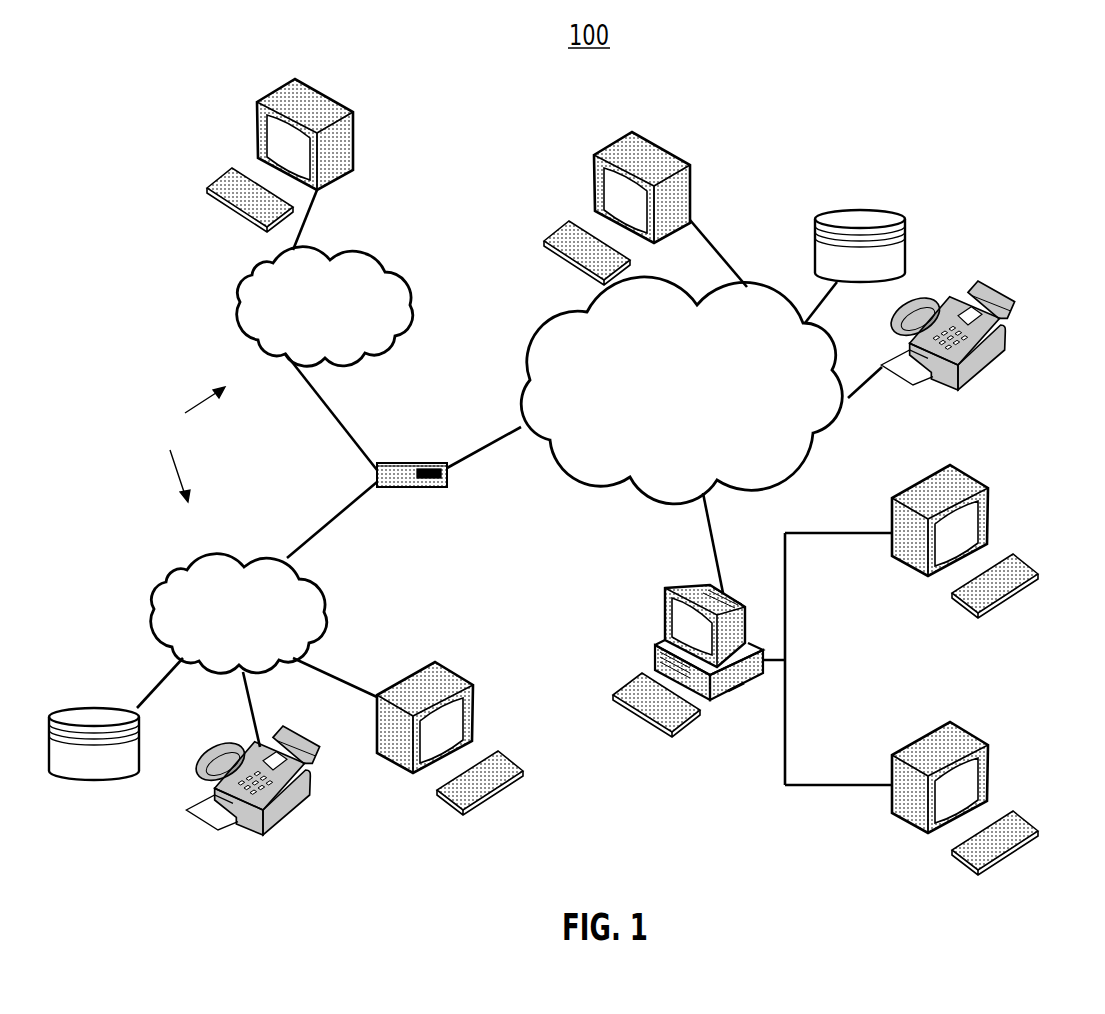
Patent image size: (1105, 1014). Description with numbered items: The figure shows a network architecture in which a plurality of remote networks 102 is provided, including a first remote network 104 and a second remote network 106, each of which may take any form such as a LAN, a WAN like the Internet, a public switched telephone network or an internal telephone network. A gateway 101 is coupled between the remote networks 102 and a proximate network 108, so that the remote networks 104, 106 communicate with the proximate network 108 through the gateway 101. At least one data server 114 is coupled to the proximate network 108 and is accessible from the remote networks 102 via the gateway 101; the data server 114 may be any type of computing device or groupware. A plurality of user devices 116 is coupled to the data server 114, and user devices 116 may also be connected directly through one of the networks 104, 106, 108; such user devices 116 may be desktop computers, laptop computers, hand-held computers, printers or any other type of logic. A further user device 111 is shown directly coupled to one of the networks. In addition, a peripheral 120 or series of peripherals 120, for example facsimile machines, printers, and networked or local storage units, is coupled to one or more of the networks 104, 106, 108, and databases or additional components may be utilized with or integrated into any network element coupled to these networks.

The gateway 101 is at (412, 460).
The remote networks 102 is at (185, 444).
The first remote network 104 is at (155, 583).
The second remote network 106 is at (412, 312).
The proximate network 108 is at (808, 453).
The user device 111 is at (693, 200).
The data server 114 is at (665, 613).
The user devices 116 is at (353, 145).
The peripheral 120 is at (860, 207).